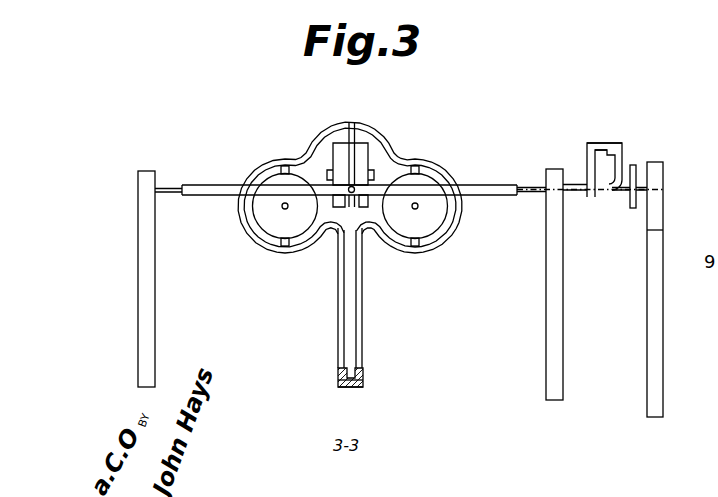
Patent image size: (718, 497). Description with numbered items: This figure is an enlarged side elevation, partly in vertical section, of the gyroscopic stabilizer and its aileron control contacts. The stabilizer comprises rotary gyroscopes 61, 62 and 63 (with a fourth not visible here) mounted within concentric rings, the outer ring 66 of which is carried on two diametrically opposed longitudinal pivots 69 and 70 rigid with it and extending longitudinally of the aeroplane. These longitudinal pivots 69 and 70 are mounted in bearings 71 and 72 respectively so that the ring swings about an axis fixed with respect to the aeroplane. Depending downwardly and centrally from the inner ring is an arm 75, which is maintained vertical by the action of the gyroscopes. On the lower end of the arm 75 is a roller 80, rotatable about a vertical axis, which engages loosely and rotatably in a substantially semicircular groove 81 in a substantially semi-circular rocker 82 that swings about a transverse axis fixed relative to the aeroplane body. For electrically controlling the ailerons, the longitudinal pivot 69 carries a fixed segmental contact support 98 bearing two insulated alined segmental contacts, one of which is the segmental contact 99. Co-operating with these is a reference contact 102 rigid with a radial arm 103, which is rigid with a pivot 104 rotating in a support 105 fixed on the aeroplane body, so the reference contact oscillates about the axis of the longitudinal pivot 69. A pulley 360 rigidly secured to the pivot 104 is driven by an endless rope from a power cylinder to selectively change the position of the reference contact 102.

The gyroscope 61 is at (437, 213).
The gyroscope 62 is at (363, 153).
The gyroscope 63 is at (272, 222).
The outer ring 66 is at (213, 186).
The longitudinal pivot 69 is at (527, 187).
The longitudinal pivot 70 is at (170, 188).
The bearing 71 is at (546, 262).
The bearing 72 is at (153, 270).
The arm 75 is at (348, 267).
The roller 80 is at (360, 369).
The semicircular groove 81 is at (343, 388).
The rocker 82 is at (363, 386).
The segmental contact support 98 is at (585, 191).
The segmental electric contact 99 is at (587, 158).
The reference contact 102 is at (610, 142).
The radial arm 103 is at (618, 193).
The pivot 104 is at (660, 191).
The support 105 is at (660, 238).
The pulley 360 is at (640, 157).